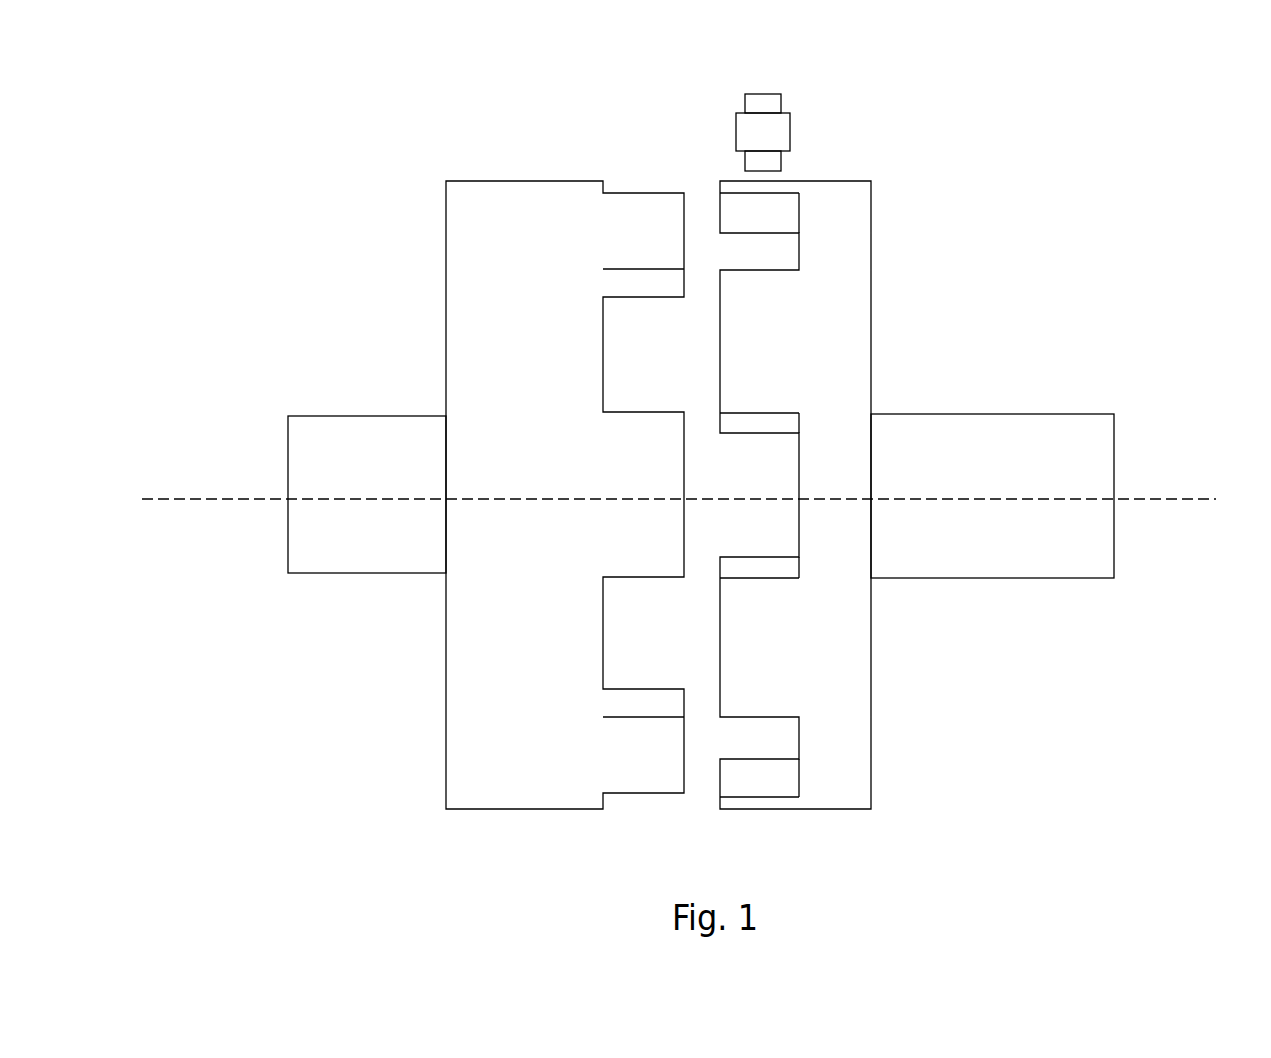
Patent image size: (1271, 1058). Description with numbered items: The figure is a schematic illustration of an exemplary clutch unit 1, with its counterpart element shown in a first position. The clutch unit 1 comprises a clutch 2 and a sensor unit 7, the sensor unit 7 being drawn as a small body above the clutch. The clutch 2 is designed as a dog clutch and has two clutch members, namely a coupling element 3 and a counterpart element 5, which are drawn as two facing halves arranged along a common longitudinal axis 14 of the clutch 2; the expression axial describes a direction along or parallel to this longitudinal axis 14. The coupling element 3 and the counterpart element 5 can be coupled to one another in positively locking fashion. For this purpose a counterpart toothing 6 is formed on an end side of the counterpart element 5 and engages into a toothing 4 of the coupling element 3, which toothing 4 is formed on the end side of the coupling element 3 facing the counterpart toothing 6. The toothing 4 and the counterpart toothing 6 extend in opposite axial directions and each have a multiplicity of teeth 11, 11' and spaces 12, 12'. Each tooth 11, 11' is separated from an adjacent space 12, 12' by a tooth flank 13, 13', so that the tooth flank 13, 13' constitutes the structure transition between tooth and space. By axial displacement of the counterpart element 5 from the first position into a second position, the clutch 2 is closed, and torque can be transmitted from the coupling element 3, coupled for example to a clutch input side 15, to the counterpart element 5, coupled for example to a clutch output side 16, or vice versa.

The clutch unit 1 is at (300, 152).
The clutch 2 is at (432, 320).
The coupling element 3 is at (833, 403).
The toothing 4 is at (750, 340).
The counterpart element 5 is at (570, 243).
The counterpart toothing 6 is at (658, 225).
The sensor unit 7 is at (769, 132).
The tooth 11 is at (832, 489).
The tooth 11' is at (598, 214).
The space 12 is at (870, 751).
The space 12' is at (495, 706).
The tooth flank 13 is at (864, 709).
The tooth flank 13' is at (507, 655).
The longitudinal axis 14 is at (1007, 498).
The clutch input side 15 is at (909, 473).
The clutch output side 16 is at (406, 460).